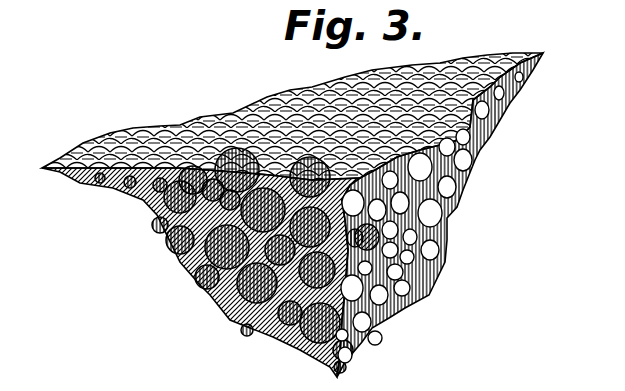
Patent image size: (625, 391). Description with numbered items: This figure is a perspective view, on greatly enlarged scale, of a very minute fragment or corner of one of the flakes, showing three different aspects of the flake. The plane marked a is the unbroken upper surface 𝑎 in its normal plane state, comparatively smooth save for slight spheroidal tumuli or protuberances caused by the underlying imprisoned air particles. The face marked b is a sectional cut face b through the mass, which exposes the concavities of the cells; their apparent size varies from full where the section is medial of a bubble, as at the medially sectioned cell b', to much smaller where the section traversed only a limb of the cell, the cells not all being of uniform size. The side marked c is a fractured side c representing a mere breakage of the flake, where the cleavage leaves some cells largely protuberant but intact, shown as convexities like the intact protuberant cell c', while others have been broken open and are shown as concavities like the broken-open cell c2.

The unbroken upper surface a is at (184, 128).
The sectional cut face b is at (201, 262).
The medially sectioned cell b' is at (176, 287).
The fractured side c is at (439, 215).
The intact protuberant cell c' is at (431, 229).
The broken-open cell c2 is at (377, 238).